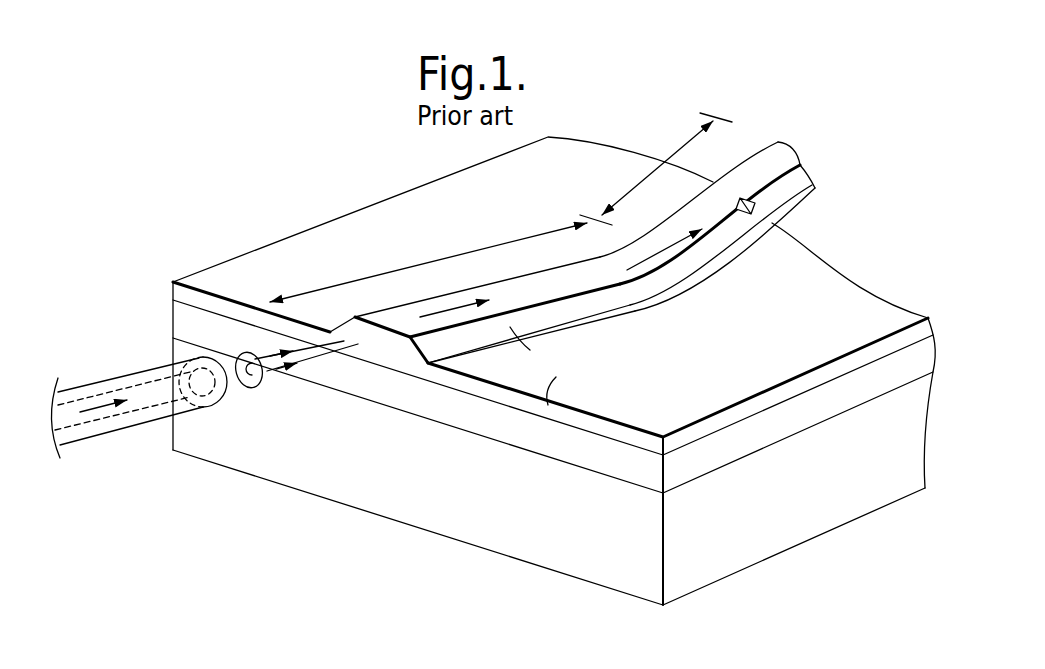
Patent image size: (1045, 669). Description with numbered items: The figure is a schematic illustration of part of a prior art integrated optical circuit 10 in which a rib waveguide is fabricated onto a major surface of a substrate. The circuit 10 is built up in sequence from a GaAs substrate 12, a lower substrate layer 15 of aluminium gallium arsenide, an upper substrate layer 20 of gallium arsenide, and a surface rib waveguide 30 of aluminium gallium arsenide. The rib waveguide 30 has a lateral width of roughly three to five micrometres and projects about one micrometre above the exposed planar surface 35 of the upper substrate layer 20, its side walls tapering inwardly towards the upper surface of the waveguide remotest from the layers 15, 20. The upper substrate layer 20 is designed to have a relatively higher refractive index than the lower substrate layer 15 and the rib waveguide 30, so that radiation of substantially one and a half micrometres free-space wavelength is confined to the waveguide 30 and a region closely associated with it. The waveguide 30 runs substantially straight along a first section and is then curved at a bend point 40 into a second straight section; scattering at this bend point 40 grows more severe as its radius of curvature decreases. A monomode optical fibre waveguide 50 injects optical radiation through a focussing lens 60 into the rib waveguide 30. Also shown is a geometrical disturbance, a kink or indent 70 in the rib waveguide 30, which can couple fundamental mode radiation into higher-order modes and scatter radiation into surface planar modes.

The integrated optical circuit 10 is at (697, 67).
The GaAs substrate 12 is at (777, 530).
The lower substrate layer 15 is at (543, 442).
The upper substrate layer 20 is at (625, 433).
The rib waveguide 30 is at (403, 310).
The exposed planar surface 35 is at (267, 272).
The bend point 40 is at (697, 290).
The monomode optical fibre waveguide 50 is at (157, 395).
The focussing lens 60 is at (254, 388).
The indent 70 is at (755, 205).